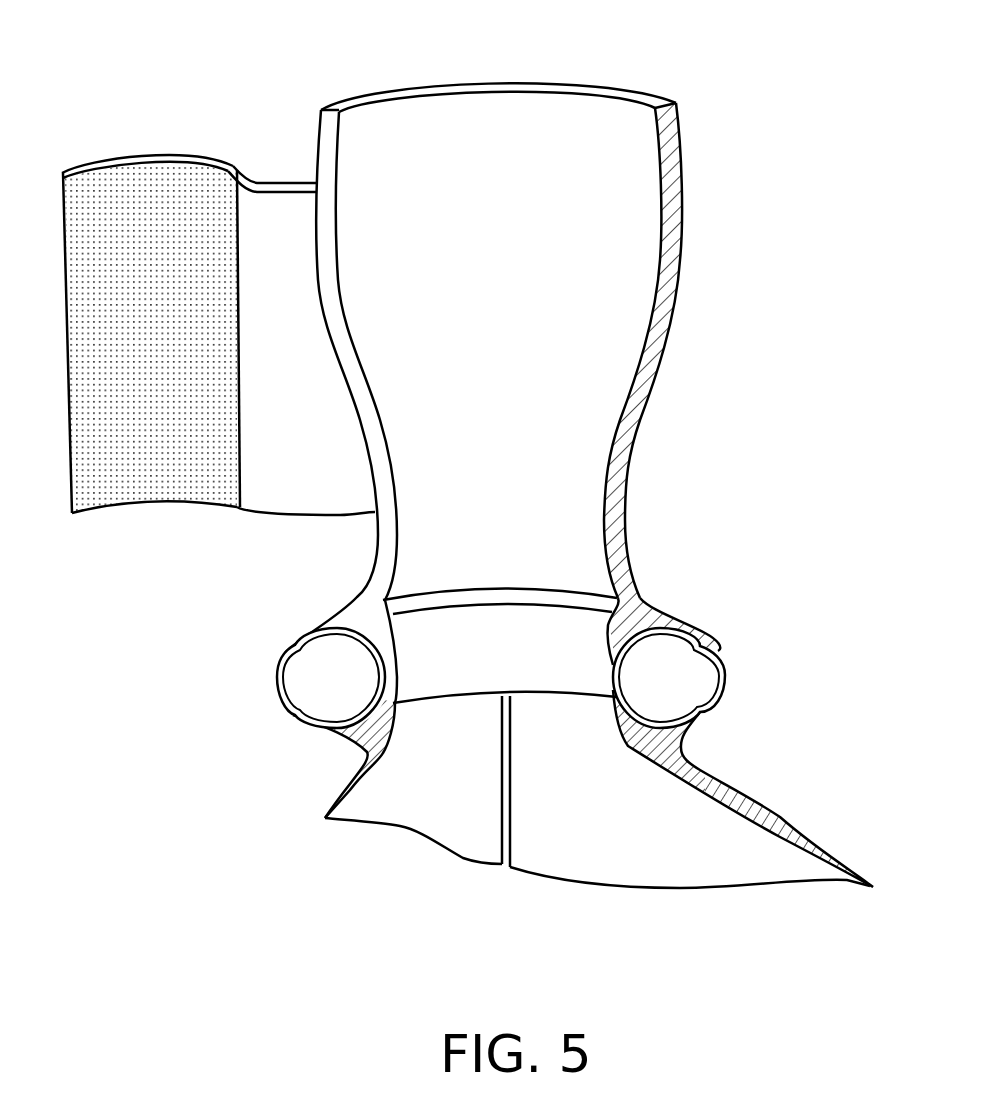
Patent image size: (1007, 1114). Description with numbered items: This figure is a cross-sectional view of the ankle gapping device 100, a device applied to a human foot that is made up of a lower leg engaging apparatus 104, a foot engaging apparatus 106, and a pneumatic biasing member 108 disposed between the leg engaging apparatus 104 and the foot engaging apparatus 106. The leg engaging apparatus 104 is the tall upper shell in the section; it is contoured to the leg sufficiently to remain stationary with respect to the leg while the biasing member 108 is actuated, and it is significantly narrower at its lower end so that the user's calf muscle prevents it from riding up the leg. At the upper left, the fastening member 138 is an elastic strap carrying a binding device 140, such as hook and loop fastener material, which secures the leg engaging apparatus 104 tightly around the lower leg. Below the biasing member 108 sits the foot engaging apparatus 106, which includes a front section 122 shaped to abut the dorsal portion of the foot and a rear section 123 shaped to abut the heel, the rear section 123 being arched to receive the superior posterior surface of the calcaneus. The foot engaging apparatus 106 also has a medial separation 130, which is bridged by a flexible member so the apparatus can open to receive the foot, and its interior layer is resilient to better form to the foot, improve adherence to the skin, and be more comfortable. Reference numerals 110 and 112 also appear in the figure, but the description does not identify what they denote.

The ankle gapping device 100 is at (807, 456).
The lower leg engaging apparatus 104 is at (682, 192).
The foot engaging apparatus 106 is at (417, 827).
The pneumatic biasing member 108 is at (727, 677).
The left toroidal seal ring 110 is at (293, 722).
The retaining hood / lip 112 is at (718, 630).
The front section 122 is at (760, 813).
The rear section 123 is at (340, 781).
The medial separation 130 is at (505, 866).
The fastening member 138 is at (253, 193).
The binding device 140 is at (105, 182).